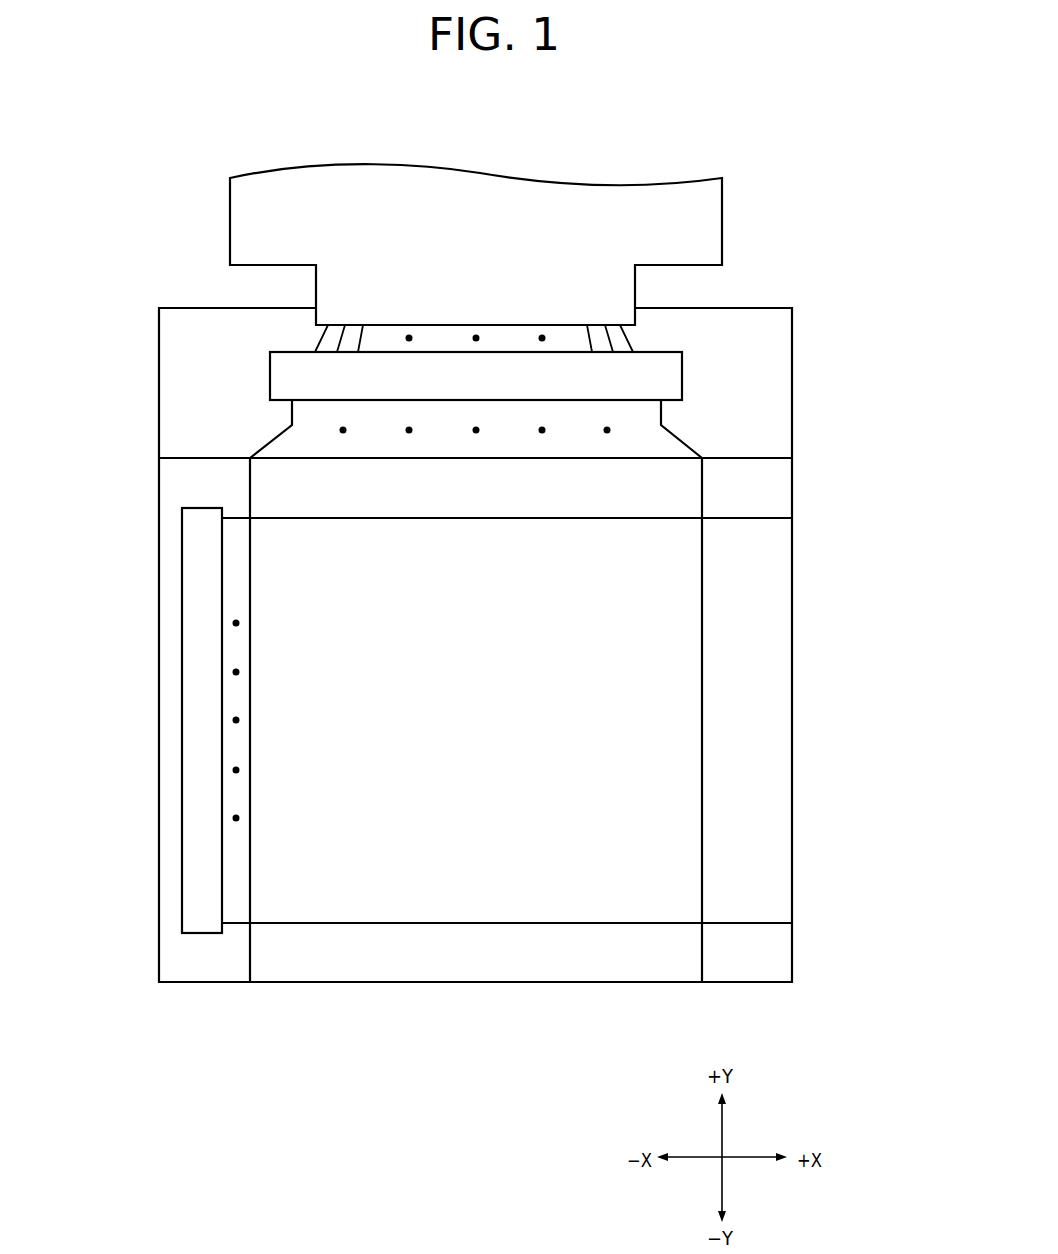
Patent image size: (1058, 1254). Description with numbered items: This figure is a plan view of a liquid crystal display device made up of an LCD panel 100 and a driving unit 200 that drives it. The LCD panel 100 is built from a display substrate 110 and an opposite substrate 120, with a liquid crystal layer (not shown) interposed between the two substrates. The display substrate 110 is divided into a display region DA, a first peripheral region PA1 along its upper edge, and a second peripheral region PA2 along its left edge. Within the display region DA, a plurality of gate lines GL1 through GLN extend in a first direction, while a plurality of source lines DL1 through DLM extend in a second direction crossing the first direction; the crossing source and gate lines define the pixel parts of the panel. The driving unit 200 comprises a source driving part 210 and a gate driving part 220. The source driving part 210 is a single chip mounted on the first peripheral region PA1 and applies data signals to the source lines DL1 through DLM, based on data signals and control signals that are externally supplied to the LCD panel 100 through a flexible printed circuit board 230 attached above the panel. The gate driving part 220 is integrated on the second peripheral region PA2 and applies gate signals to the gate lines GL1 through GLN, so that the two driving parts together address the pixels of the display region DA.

The LCD panel 100 is at (873, 368).
The display substrate 110 is at (792, 384).
The opposite substrate 120 is at (756, 458).
The driving unit 200 is at (377, 548).
The source driving part 210 is at (270, 377).
The gate driving part 220 is at (165, 720).
The flexible printed circuit board 230 is at (230, 233).
The display region DA is at (686, 738).
The first peripheral region PA1 is at (766, 338).
The second peripheral region PA2 is at (206, 958).
The first source line DL1 is at (250, 487).
The M-th source line DLM is at (702, 489).
The first gate line GL1 is at (465, 518).
The N-th gate line GLN is at (476, 923).